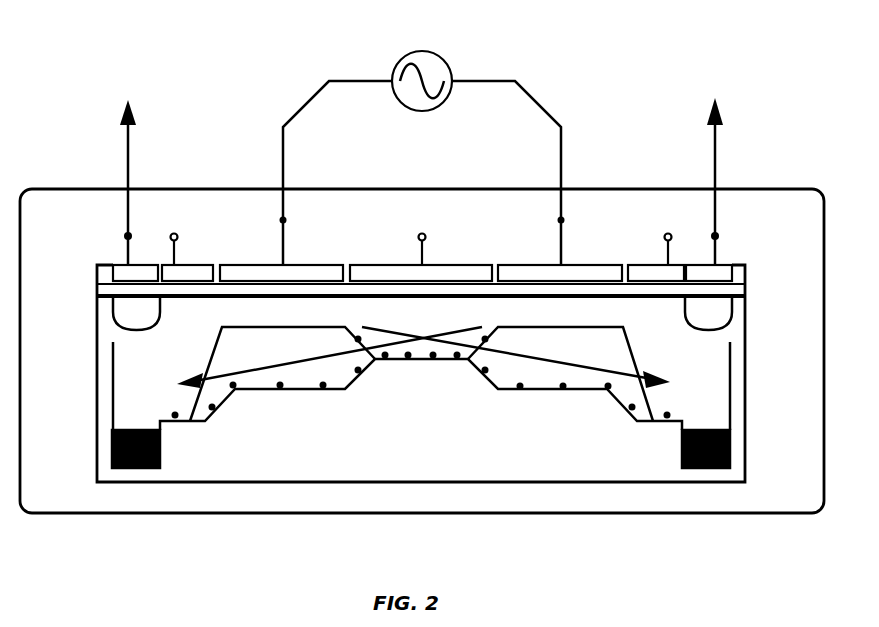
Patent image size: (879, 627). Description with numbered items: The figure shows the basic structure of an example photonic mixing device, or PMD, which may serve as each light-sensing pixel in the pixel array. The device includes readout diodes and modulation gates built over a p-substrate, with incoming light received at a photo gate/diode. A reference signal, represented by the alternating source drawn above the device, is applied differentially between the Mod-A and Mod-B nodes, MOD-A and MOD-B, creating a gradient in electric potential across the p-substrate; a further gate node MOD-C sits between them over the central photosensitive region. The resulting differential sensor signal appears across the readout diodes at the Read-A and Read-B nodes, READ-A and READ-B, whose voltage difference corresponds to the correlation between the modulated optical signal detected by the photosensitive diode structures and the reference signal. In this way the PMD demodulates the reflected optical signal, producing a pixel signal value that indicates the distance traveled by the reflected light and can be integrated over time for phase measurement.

The Read-A node READ-A is at (86, 182).
The Read-B node READ-B is at (728, 165).
The Mod-A node MOD-A is at (336, 173).
The Mod-B node MOD-B is at (543, 173).
The modulation electrode C MOD-C is at (458, 240).
The photonic mixing device PMD is at (422, 351).